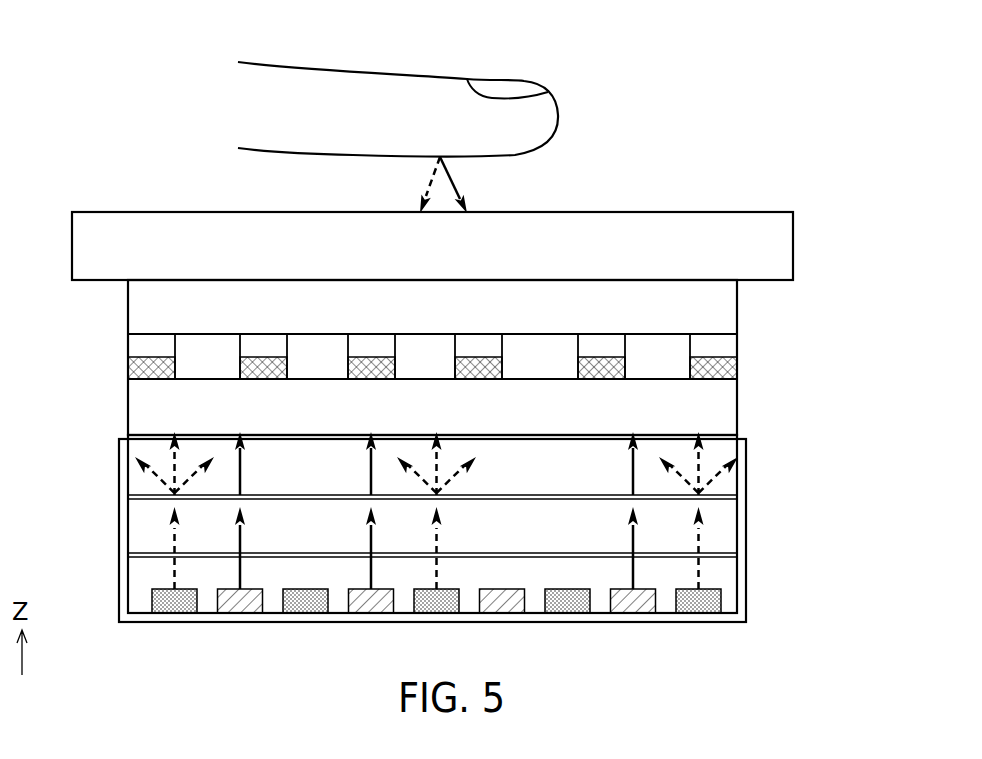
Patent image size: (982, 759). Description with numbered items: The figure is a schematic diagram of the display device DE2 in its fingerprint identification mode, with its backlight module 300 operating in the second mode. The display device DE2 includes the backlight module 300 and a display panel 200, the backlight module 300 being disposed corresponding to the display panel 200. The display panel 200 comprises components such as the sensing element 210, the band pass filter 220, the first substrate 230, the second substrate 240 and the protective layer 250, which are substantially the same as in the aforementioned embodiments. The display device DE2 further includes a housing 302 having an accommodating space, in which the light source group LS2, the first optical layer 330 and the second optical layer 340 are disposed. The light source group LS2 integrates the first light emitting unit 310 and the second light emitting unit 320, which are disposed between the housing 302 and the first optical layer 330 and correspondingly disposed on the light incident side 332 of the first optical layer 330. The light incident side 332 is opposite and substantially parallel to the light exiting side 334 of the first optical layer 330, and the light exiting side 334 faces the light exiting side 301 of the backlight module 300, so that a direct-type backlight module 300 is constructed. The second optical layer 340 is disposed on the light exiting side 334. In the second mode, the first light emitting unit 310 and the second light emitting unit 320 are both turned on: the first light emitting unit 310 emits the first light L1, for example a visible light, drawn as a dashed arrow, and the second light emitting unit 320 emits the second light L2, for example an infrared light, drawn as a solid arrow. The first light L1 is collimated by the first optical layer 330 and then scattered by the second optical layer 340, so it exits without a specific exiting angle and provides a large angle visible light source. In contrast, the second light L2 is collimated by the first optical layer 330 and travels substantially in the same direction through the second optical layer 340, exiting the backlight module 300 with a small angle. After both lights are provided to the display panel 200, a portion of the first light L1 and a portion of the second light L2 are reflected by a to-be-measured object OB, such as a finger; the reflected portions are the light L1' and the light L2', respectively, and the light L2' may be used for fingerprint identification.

The to-be-measured object OB is at (411, 78).
The light L1' is at (399, 186).
The light L2' is at (486, 186).
The display device DE2 is at (479, 413).
The protective layer 250 is at (783, 243).
The display panel 200 is at (846, 283).
The second substrate 240 is at (729, 313).
The band pass filter 220 is at (726, 343).
The sensing element 210 is at (726, 370).
The first substrate 230 is at (726, 398).
The backlight module 300 is at (823, 467).
The light exiting side of the backlight module 301 is at (726, 435).
The housing 302 is at (133, 627).
The second optical layer 340 is at (732, 471).
The light exiting side of the first optical layer 334 is at (162, 498).
The first optical layer 330 is at (732, 535).
The light incident side of the first optical layer 332 is at (158, 553).
The light source group LS2 is at (732, 587).
The first light emitting unit 310 is at (700, 603).
The second light emitting unit 320 is at (627, 615).
The first light L1 is at (436, 553).
The second light L2 is at (436, 553).